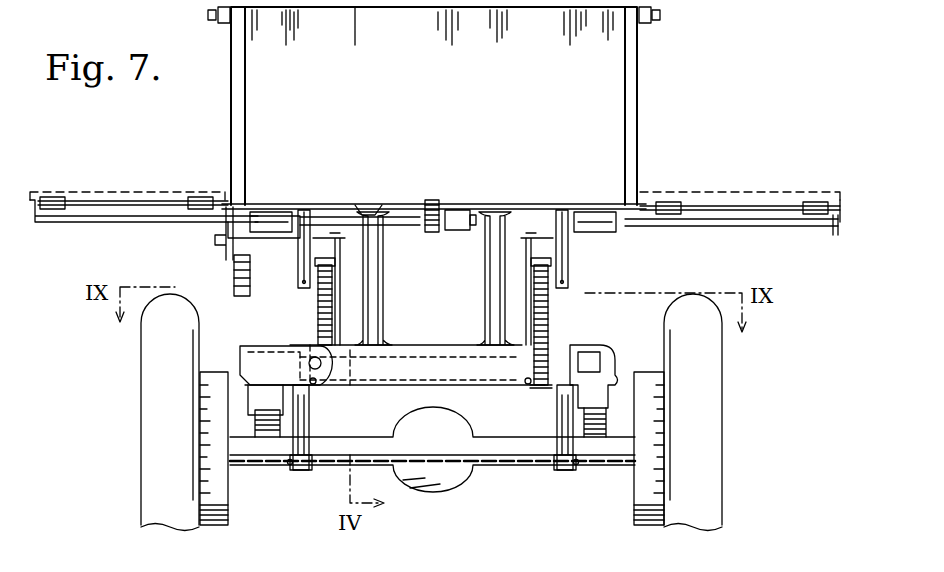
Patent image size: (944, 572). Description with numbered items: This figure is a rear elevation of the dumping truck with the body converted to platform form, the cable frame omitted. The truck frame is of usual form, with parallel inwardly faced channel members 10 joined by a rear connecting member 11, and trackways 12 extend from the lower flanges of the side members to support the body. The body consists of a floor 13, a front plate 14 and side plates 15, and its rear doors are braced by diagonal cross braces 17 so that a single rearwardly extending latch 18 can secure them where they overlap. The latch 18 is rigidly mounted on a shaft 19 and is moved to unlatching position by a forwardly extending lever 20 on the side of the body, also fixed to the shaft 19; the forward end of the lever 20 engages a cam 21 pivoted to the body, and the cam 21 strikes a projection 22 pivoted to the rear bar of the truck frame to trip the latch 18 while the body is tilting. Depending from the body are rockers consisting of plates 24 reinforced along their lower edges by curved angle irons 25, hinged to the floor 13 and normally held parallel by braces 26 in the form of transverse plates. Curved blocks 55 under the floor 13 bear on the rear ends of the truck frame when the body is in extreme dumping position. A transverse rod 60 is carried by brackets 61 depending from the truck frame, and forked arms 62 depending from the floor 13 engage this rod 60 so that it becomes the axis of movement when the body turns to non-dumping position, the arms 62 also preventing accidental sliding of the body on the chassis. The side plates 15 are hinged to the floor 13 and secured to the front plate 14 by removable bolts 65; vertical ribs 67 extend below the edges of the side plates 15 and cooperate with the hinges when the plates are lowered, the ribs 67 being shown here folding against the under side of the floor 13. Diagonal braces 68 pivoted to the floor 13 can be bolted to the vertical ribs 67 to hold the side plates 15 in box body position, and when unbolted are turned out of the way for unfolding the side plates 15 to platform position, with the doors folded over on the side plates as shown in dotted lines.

The channel member 10 is at (572, 345).
The rear connecting member 11 is at (430, 356).
The trackway 12 is at (545, 388).
The floor 13 is at (524, 207).
The front plate 14 is at (637, 128).
The side plate 15 is at (722, 206).
The diagonal cross brace 17 is at (806, 192).
The latch 18 is at (434, 202).
The shaft 19 is at (340, 216).
The lever 20 is at (226, 240).
The cam 21 is at (233, 287).
The projection 22 is at (258, 340).
The plate 24 is at (550, 316).
The curved angle iron 25 is at (528, 312).
The brace 26 is at (526, 386).
The curved block 55 is at (576, 233).
The transverse rod 60 is at (508, 470).
The bracket 61 is at (568, 472).
The forked arm 62 is at (484, 312).
The removable bolt 65 is at (433, 17).
The vertical rib 67 is at (680, 222).
The diagonal brace 68 is at (568, 270).